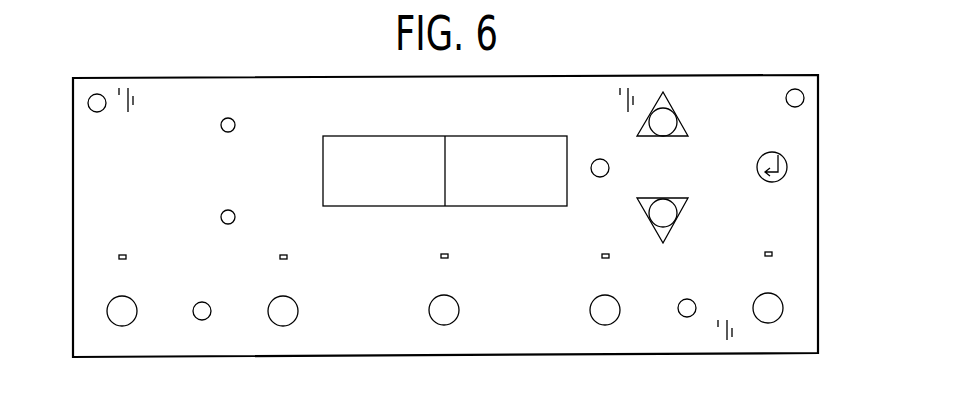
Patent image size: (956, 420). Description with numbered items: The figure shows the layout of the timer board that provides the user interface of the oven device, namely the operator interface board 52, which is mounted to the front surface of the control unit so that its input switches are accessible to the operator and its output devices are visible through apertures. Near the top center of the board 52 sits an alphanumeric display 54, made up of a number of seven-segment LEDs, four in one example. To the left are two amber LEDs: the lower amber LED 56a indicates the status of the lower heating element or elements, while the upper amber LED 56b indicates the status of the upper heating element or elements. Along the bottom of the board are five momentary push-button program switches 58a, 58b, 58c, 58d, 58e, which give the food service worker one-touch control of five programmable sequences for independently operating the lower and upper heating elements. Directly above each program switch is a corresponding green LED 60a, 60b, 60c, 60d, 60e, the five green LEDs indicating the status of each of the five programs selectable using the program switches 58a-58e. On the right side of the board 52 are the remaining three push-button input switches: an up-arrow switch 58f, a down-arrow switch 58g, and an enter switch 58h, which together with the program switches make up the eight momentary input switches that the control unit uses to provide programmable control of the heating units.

The operator interface board 52 is at (741, 74).
The alphanumeric display 54 is at (505, 134).
The lower amber LED 56a is at (221, 217).
The upper amber LED 56b is at (222, 131).
The program switch 58a is at (118, 326).
The program switch 58b is at (279, 326).
The program switch 58c is at (440, 325).
The program switch 58d is at (601, 325).
The program switch 58e is at (764, 323).
The up-arrow switch 58f is at (680, 112).
The down-arrow switch 58g is at (680, 218).
The enter switch 58h is at (757, 168).
The green LED 60a is at (122, 259).
The green LED 60b is at (283, 259).
The green LED 60c is at (444, 258).
The green LED 60d is at (605, 258).
The green LED 60e is at (768, 256).